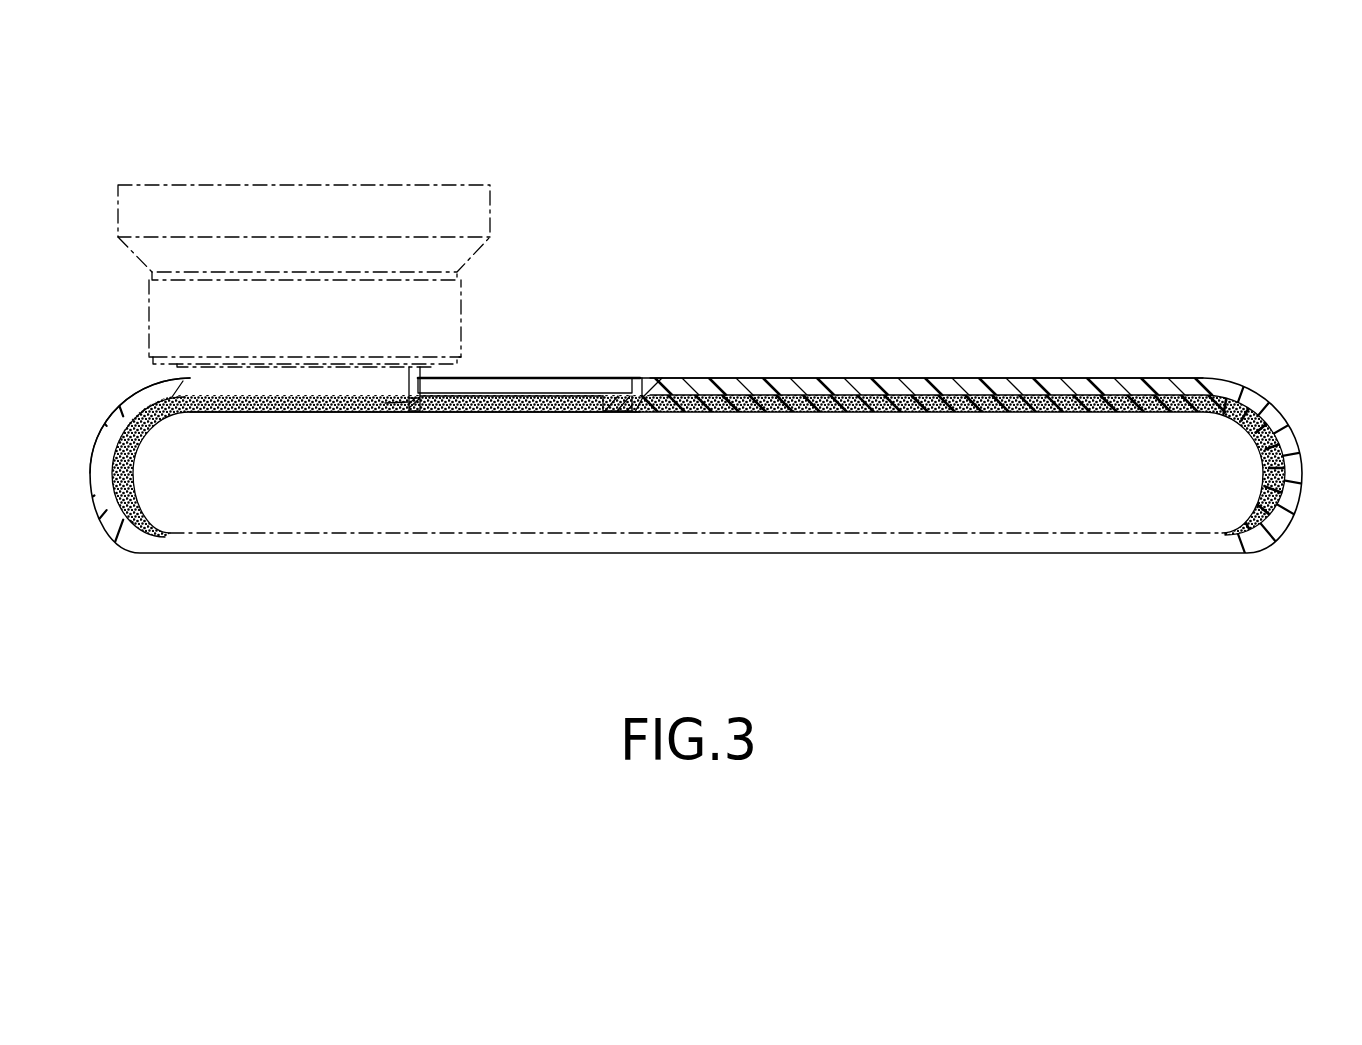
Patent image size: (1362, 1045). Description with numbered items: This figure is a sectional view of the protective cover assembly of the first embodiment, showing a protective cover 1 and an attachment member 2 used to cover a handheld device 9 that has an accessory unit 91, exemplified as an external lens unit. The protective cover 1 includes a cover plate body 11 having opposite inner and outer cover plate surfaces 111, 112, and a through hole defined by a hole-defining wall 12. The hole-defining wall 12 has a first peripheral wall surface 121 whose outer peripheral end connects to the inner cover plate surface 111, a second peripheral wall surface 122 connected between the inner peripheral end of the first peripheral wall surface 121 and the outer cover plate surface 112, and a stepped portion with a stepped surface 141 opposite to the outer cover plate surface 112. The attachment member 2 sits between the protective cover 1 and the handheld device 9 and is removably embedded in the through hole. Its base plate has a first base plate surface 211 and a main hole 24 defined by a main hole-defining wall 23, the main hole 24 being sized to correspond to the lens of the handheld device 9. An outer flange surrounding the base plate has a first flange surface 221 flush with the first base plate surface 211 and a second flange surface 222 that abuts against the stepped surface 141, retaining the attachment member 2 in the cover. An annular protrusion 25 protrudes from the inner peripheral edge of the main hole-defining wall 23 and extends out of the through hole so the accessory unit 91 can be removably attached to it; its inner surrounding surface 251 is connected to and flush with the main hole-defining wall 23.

The protective cover 1 is at (678, 463).
The cover plate body 11 is at (1001, 397).
The inner cover plate surface 111 is at (915, 412).
The outer cover plate surface 112 is at (863, 378).
The hole-defining wall 12 is at (165, 392).
The first peripheral wall surface 121 is at (658, 415).
The second peripheral wall surface 122 is at (657, 383).
The attachment member 2 is at (473, 456).
The first base plate surface 211 is at (417, 494).
The first flange surface 221 is at (411, 413).
The second flange surface 222 is at (634, 332).
The stepped surface 141 is at (635, 383).
The main hole-defining wall 23 is at (329, 530).
The main hole 24 is at (385, 403).
The annular protrusion 25 is at (529, 366).
The inner surrounding surface 251 is at (420, 372).
The handheld device 9 is at (1104, 533).
The accessory unit 91 is at (233, 212).